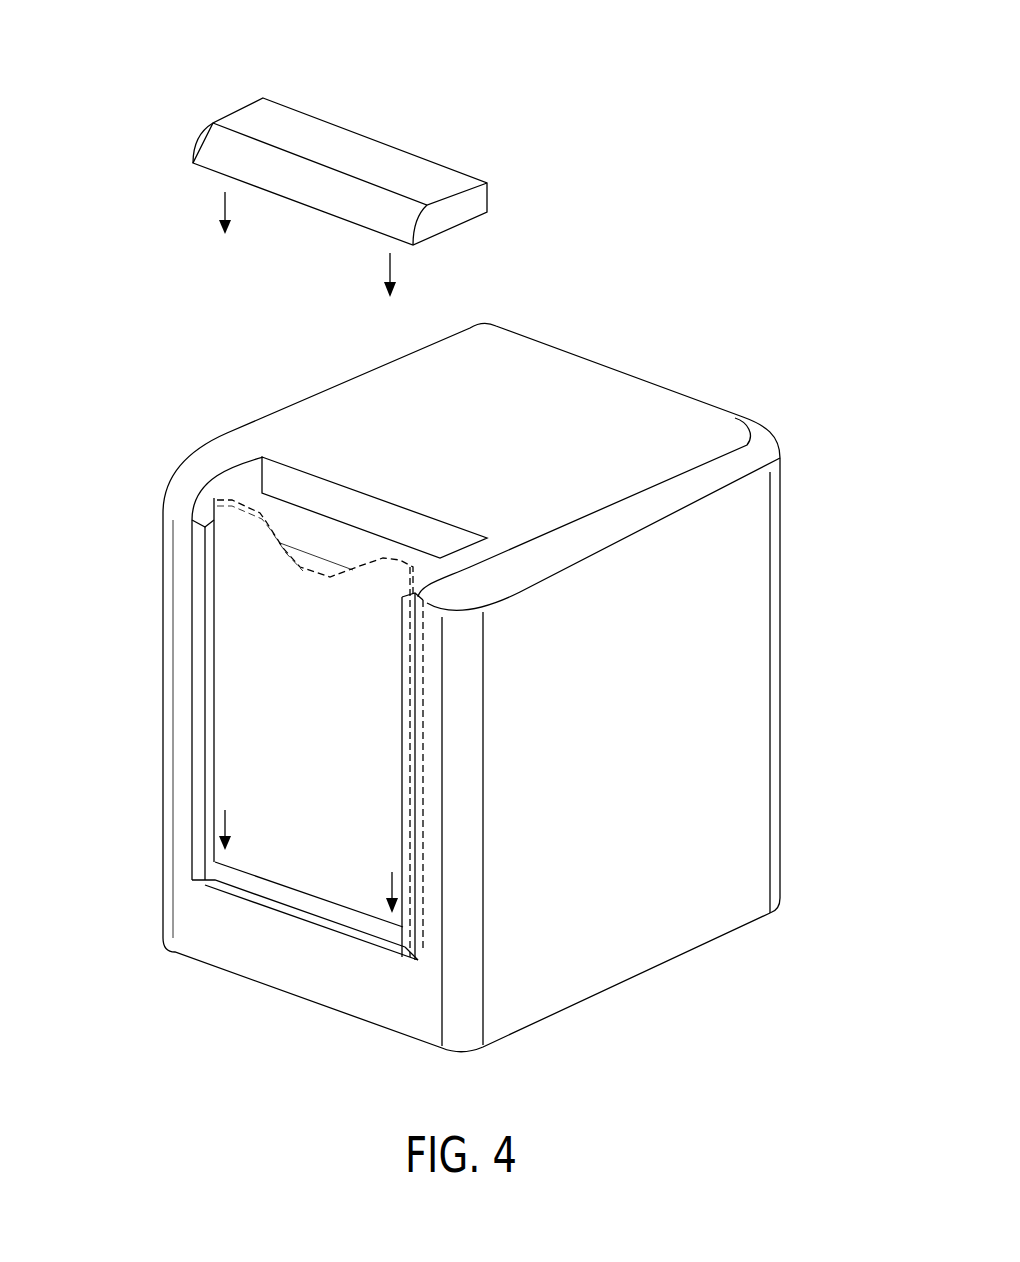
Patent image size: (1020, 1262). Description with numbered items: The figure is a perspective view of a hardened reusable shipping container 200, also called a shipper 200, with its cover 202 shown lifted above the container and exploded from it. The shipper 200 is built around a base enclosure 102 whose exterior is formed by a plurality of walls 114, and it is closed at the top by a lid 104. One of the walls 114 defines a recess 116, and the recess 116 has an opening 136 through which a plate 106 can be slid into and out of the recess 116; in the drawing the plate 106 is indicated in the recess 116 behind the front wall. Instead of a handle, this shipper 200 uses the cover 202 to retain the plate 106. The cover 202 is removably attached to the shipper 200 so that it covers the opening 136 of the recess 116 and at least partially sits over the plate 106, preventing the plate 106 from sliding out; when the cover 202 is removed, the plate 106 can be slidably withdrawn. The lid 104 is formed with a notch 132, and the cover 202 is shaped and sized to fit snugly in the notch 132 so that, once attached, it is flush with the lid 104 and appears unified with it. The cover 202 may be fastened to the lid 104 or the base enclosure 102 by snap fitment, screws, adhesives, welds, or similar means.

The hardened reusable shipping container 200 is at (735, 100).
The cover 202 is at (370, 150).
The base enclosure 102 is at (782, 722).
The lid 104 is at (777, 460).
The plate 106 is at (222, 497).
The walls 114 is at (178, 720).
The recess 116 is at (223, 893).
The notch 132 is at (398, 500).
The opening 136 is at (193, 520).